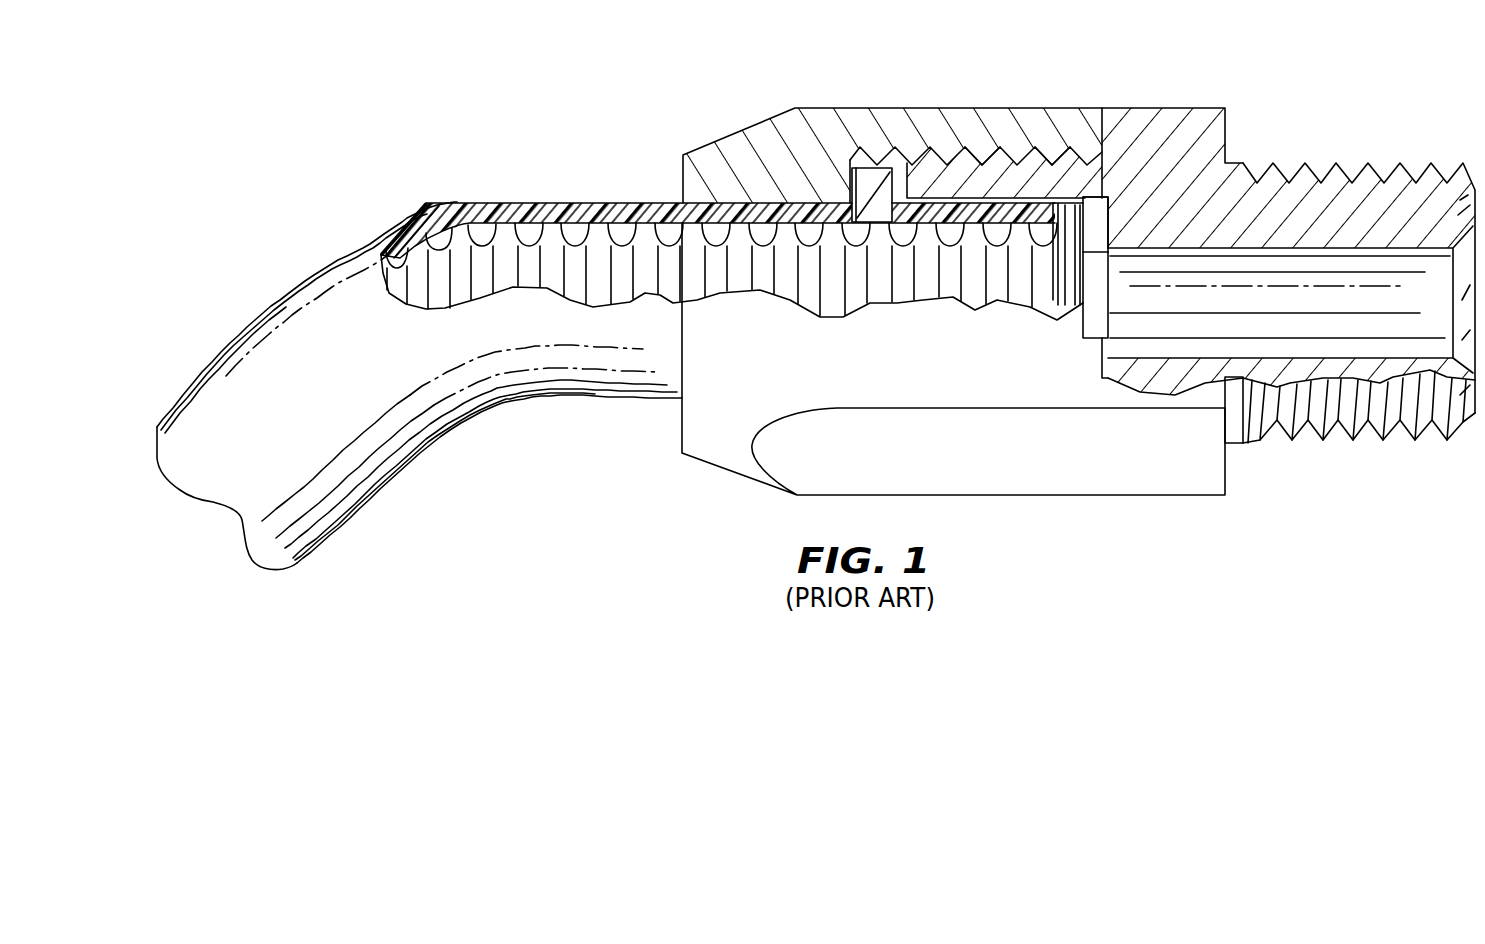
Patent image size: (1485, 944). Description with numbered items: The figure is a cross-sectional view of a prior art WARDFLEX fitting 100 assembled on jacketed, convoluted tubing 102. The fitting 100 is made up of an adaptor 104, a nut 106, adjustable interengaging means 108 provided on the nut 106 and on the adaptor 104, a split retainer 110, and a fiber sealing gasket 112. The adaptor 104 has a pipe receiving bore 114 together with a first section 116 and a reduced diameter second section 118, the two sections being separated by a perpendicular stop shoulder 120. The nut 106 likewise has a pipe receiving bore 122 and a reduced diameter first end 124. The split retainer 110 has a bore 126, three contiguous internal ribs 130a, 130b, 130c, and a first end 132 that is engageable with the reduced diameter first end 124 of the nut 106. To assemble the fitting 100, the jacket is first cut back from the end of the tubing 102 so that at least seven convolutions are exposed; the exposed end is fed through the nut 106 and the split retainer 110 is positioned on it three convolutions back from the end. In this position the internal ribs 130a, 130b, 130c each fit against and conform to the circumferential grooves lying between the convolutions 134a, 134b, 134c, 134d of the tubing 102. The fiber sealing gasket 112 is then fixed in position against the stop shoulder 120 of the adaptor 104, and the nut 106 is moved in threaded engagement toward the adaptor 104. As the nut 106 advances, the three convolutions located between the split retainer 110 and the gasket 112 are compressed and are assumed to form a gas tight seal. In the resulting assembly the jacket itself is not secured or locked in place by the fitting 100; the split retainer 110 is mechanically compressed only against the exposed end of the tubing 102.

The fitting 100 is at (732, 434).
The jacketed convoluted tubing 102 is at (343, 425).
The adaptor 104 is at (1317, 425).
The nut 106 is at (980, 464).
The adjustable interengaging means 108 is at (912, 180).
The split retainer 110 is at (1000, 203).
The fiber sealing gasket 112 is at (1097, 297).
The pipe receiving bore 114 is at (1078, 195).
The first section 116 is at (977, 185).
The second reduced diameter section 118 is at (1378, 210).
The stop shoulder 120 is at (1133, 224).
The pipe receiving bore 122 is at (885, 165).
The reduced diameter first end 124 is at (703, 163).
The bore 126 is at (900, 235).
The internal rib 130a is at (965, 225).
The internal rib 130b is at (998, 210).
The internal rib 130c is at (1060, 222).
The first end 132 is at (882, 188).
The convolution 134a is at (923, 232).
The convolution 134b is at (980, 230).
The convolution 134c is at (1028, 232).
The convolution 134d is at (1070, 225).